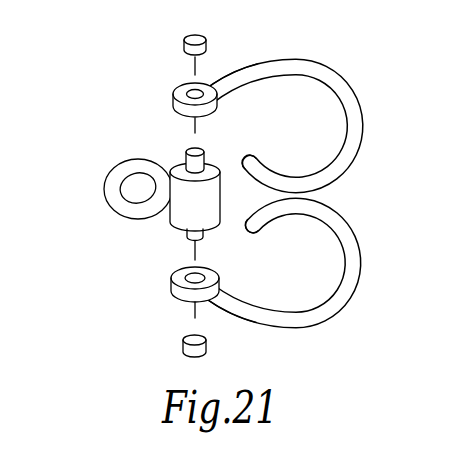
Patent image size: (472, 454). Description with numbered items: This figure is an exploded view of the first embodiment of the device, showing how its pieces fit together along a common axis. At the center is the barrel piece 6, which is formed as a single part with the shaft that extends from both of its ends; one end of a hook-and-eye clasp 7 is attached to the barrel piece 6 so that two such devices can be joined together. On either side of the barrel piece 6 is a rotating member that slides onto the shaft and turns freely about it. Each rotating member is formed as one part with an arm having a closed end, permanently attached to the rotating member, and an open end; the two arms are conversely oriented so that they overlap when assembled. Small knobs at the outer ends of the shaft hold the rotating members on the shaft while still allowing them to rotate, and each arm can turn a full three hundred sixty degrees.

The barrel piece 6 is at (175, 218).
The hook-and-eye clasp 7 is at (102, 207).